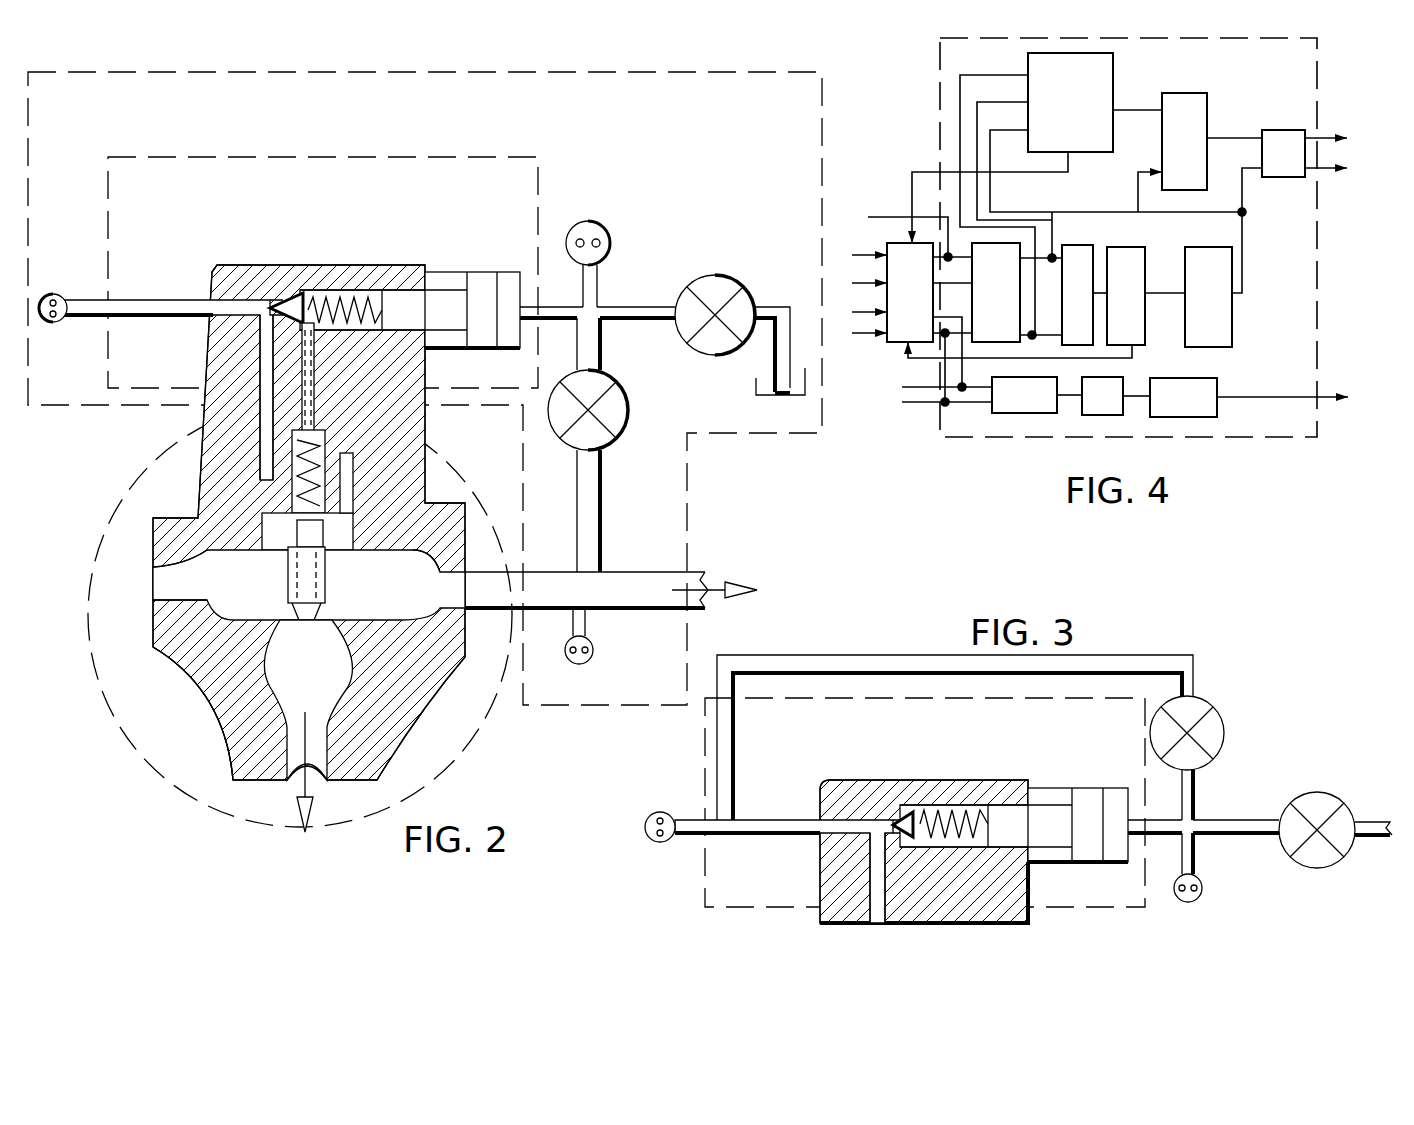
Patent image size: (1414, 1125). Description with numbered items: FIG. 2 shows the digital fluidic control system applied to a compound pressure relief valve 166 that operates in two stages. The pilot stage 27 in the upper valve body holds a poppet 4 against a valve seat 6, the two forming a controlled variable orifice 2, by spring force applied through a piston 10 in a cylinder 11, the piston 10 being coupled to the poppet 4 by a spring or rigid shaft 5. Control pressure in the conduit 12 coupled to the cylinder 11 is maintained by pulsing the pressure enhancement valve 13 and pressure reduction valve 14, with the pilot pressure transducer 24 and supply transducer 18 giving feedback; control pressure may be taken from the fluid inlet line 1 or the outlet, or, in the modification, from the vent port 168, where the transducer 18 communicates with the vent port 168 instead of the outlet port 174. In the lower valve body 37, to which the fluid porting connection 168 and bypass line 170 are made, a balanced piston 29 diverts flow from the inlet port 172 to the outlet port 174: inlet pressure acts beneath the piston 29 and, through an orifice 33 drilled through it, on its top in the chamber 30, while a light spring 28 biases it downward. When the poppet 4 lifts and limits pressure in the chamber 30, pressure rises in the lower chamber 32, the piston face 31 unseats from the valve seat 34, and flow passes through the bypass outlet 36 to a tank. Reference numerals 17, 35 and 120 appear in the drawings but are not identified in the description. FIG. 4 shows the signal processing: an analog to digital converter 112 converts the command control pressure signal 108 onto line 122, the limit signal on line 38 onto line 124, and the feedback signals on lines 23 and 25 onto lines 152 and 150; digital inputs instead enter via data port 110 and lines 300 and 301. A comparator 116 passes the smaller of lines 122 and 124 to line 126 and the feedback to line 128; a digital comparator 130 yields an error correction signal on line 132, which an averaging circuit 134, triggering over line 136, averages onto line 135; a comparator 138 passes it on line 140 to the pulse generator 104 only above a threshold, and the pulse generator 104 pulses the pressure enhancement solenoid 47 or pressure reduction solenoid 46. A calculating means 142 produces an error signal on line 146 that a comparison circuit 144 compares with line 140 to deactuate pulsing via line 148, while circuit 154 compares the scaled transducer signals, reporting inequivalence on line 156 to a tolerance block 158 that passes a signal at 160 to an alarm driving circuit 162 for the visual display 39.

In FIG. 2, the fluid inlet line 1 is at (135, 583).
In FIG. 2, the controlled variable orifice 2 is at (272, 300).
In FIG. 3, the controlled variable orifice 2 is at (888, 817).
In FIG. 2, the poppet 4 is at (303, 306).
In FIG. 3, the poppet 4 is at (907, 812).
In FIG. 2, the spring or rigid shaft 5 is at (353, 300).
In FIG. 3, the spring or rigid shaft 5 is at (952, 810).
In FIG. 2, the valve seat 6 is at (283, 313).
In FIG. 3, the valve seat 6 is at (892, 840).
In FIG. 2, the piston 10 is at (483, 282).
In FIG. 3, the piston 10 is at (1092, 813).
In FIG. 2, the cylinder 11 is at (440, 282).
In FIG. 3, the cylinder 11 is at (1050, 797).
In FIG. 2, the conduit 12 is at (598, 303).
In FIG. 3, the conduit 12 is at (1198, 817).
In FIG. 2, the pressure enhancement valve 13 is at (633, 405).
In FIG. 3, the pressure enhancement valve 13 is at (1230, 748).
In FIG. 2, the pressure reduction valve 14 is at (750, 282).
In FIG. 3, the pressure reduction valve 14 is at (1328, 783).
In FIG. 2, the conduit 17 is at (602, 495).
In FIG. 3, the conduit 17 is at (1203, 670).
In FIG. 2, the supply transducer 18 is at (43, 292).
In FIG. 3, the supply transducer 18 is at (672, 813).
In FIG. 2, the pilot or control pressure transducer 24 is at (614, 242).
In FIG. 3, the pilot or control pressure transducer 24 is at (1207, 895).
In FIG. 2, the pilot stage 27 is at (400, 158).
In FIG. 3, the pilot stage 27 is at (1020, 698).
In FIG. 2, the light spring 28 is at (300, 490).
In FIG. 2, the balanced piston 29 is at (260, 530).
In FIG. 2, the chamber 30 is at (452, 472).
In FIG. 2, the balanced piston face 31 is at (313, 630).
In FIG. 2, the lower chamber 32 is at (309, 585).
In FIG. 2, the orifice 33 is at (413, 569).
In FIG. 2, the valve seat 34 is at (177, 663).
In FIG. 2, the mixing chamber 35 is at (283, 643).
In FIG. 2, the bypass outlet 36 is at (327, 760).
In FIG. 2, the lower valve body 37 is at (460, 770).
In FIG. 2, the compound pressure relief valve 166 is at (172, 440).
In FIG. 2, the fluid porting connection 168 is at (260, 320).
In FIG. 3, the fluid porting connection 168 is at (857, 842).
In FIG. 2, the bypass line 170 is at (305, 368).
In FIG. 3, the bypass line 170 is at (907, 900).
In FIG. 2, the inlet port 172 is at (157, 592).
In FIG. 2, the outlet port 174 is at (477, 597).
In FIG. 4, the line 23 is at (853, 313).
In FIG. 4, the line 25 is at (868, 335).
In FIG. 4, the line 38 is at (855, 280).
In FIG. 4, the pulse generator 104 is at (1288, 163).
In FIG. 4, the analog command control pressure signal 108 is at (863, 250).
In FIG. 4, the data port 110 is at (898, 215).
In FIG. 4, the analog to digital converter 112 is at (910, 292).
In FIG. 4, the comparator 116 is at (996, 292).
In FIG. 4, the line 120 is at (968, 338).
In FIG. 4, the line 122 is at (948, 257).
In FIG. 4, the line 124 is at (996, 322).
In FIG. 4, the line 126 is at (1052, 245).
In FIG. 4, the line 128 is at (1038, 337).
In FIG. 4, the digital comparator 130 is at (1082, 295).
In FIG. 4, the line 132 is at (1100, 292).
In FIG. 4, the averaging circuit 134 is at (1128, 296).
In FIG. 4, the line 135 is at (1172, 290).
In FIG. 4, the line 136 is at (1112, 360).
In FIG. 4, the error correction signal comparator 138 is at (1208, 297).
In FIG. 4, the line 140 is at (1242, 275).
In FIG. 4, the averaging circuit 142 is at (1070, 102).
In FIG. 4, the comparison circuit 144 is at (1184, 141).
In FIG. 4, the line 146 is at (1128, 110).
In FIG. 4, the line 148 is at (1238, 138).
In FIG. 4, the line 150 is at (953, 407).
In FIG. 4, the line 152 is at (963, 380).
In FIG. 4, the storage and comparison circuit 154 is at (1024, 395).
In FIG. 4, the line 156 is at (1070, 397).
In FIG. 4, the tolerance block 158 is at (1104, 396).
In FIG. 4, the line 160 is at (1130, 397).
In FIG. 4, the alarm driving circuit 162 is at (1183, 397).
In FIG. 4, the line 300 is at (920, 403).
In FIG. 4, the line 301 is at (922, 387).
In FIG. 4, the visual display 39 is at (1300, 388).
In FIG. 4, the pressure reduction solenoid 46 is at (1343, 130).
In FIG. 4, the pressure enhancement solenoid 47 is at (1343, 161).